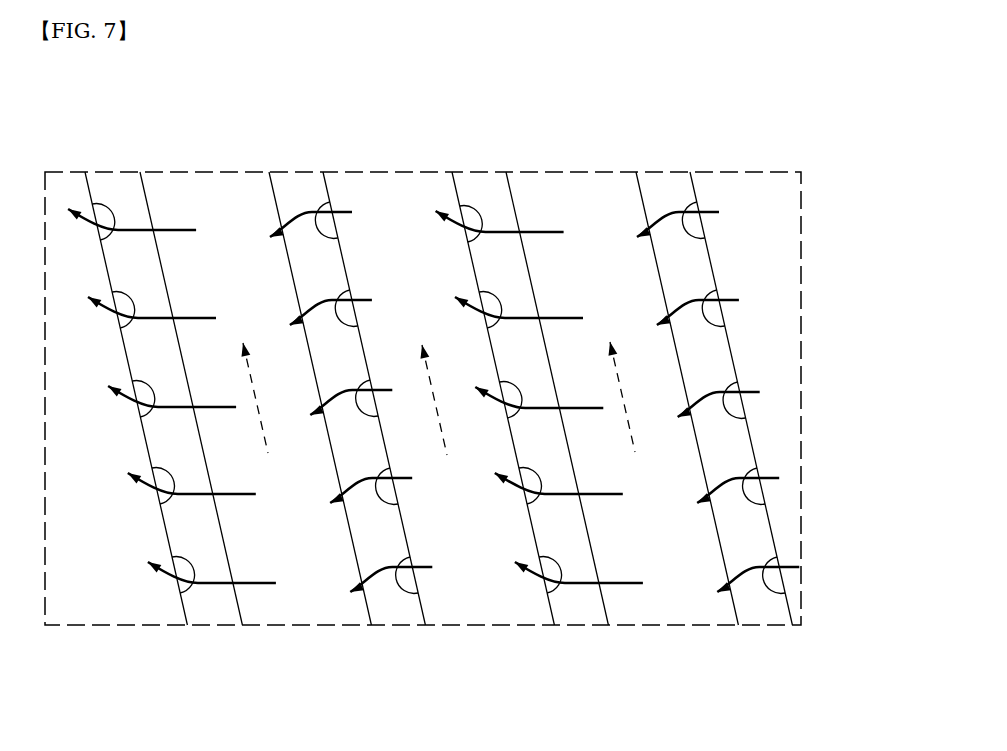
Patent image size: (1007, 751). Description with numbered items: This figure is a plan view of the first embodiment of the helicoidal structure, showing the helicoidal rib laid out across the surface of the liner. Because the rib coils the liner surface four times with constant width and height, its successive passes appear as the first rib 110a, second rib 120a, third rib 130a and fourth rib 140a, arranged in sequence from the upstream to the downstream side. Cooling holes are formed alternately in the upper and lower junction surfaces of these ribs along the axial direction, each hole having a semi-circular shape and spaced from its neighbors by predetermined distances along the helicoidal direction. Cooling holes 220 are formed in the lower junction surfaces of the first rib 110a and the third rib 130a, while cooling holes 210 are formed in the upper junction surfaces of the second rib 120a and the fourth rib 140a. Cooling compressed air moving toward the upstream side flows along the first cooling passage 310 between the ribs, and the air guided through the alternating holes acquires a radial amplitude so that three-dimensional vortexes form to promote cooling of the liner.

The first rib 110a is at (210, 605).
The second rib 120a is at (390, 600).
The third rib 130a is at (487, 183).
The fourth rib 140a is at (672, 188).
The cooling holes 210 is at (687, 210).
The cooling holes 220 is at (456, 208).
The first cooling passage 310 is at (628, 431).